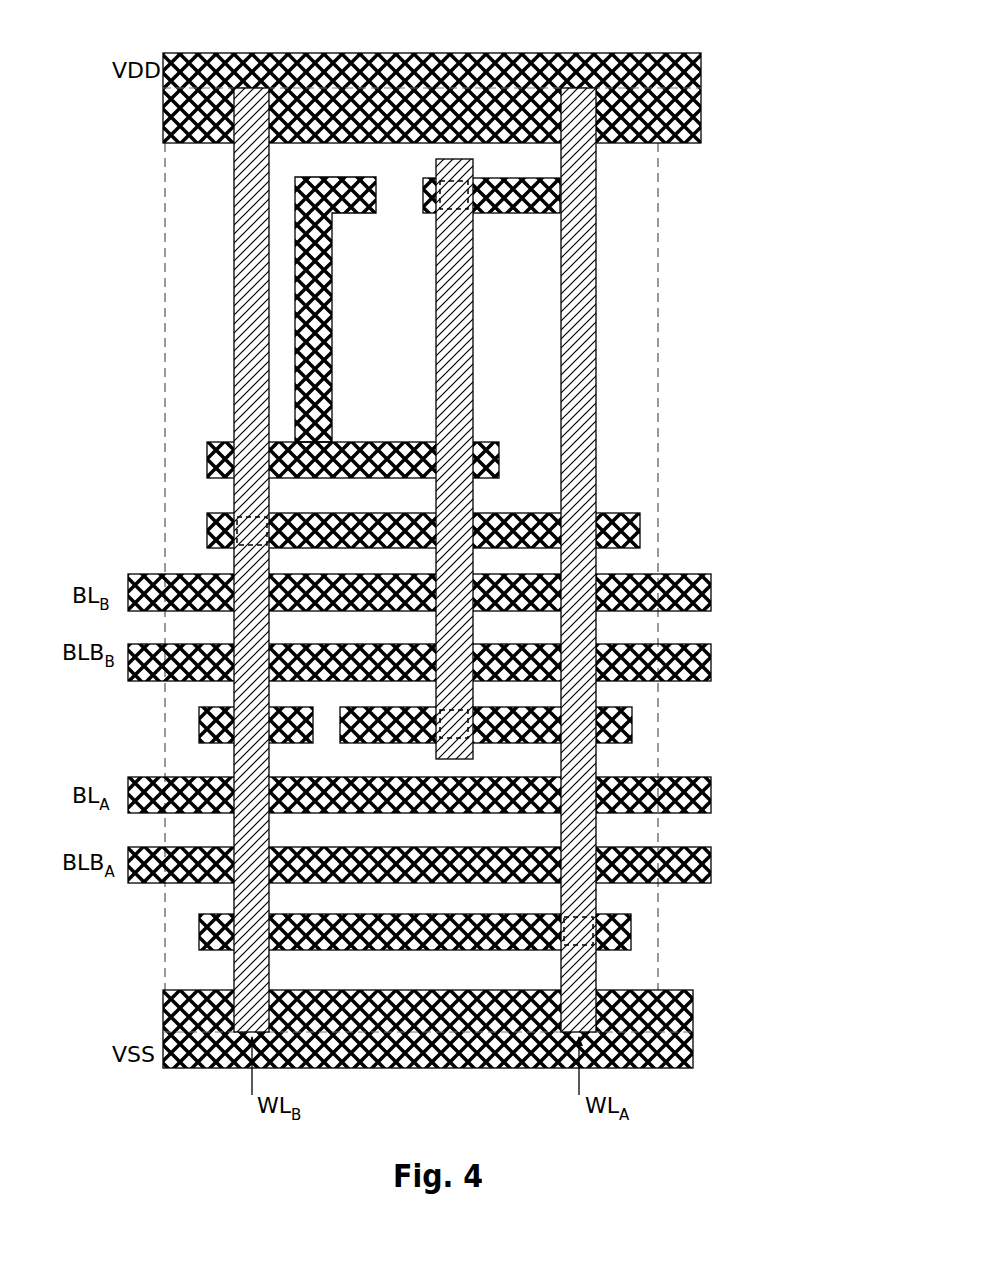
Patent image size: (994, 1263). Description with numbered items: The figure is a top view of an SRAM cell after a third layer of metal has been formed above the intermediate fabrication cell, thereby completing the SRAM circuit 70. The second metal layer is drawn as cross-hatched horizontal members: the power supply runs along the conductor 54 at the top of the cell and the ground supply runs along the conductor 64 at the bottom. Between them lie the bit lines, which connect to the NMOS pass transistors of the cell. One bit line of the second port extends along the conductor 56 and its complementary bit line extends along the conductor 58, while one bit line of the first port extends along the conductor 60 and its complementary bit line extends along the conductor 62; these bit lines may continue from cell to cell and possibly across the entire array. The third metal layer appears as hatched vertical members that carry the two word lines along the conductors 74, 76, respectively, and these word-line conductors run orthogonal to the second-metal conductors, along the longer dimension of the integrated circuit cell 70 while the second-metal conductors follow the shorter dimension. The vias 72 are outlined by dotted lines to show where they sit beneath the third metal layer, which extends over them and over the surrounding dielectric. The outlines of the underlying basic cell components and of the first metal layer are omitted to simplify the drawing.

The conductor 54 is at (676, 96).
The conductor 56 is at (710, 586).
The conductor 58 is at (710, 655).
The conductor 60 is at (710, 790).
The conductor 62 is at (710, 860).
The conductor 64 is at (690, 988).
The SRAM circuit 70 is at (788, 73).
The vias 72 is at (250, 532).
The conductor 74 is at (253, 316).
The conductor 76 is at (580, 315).